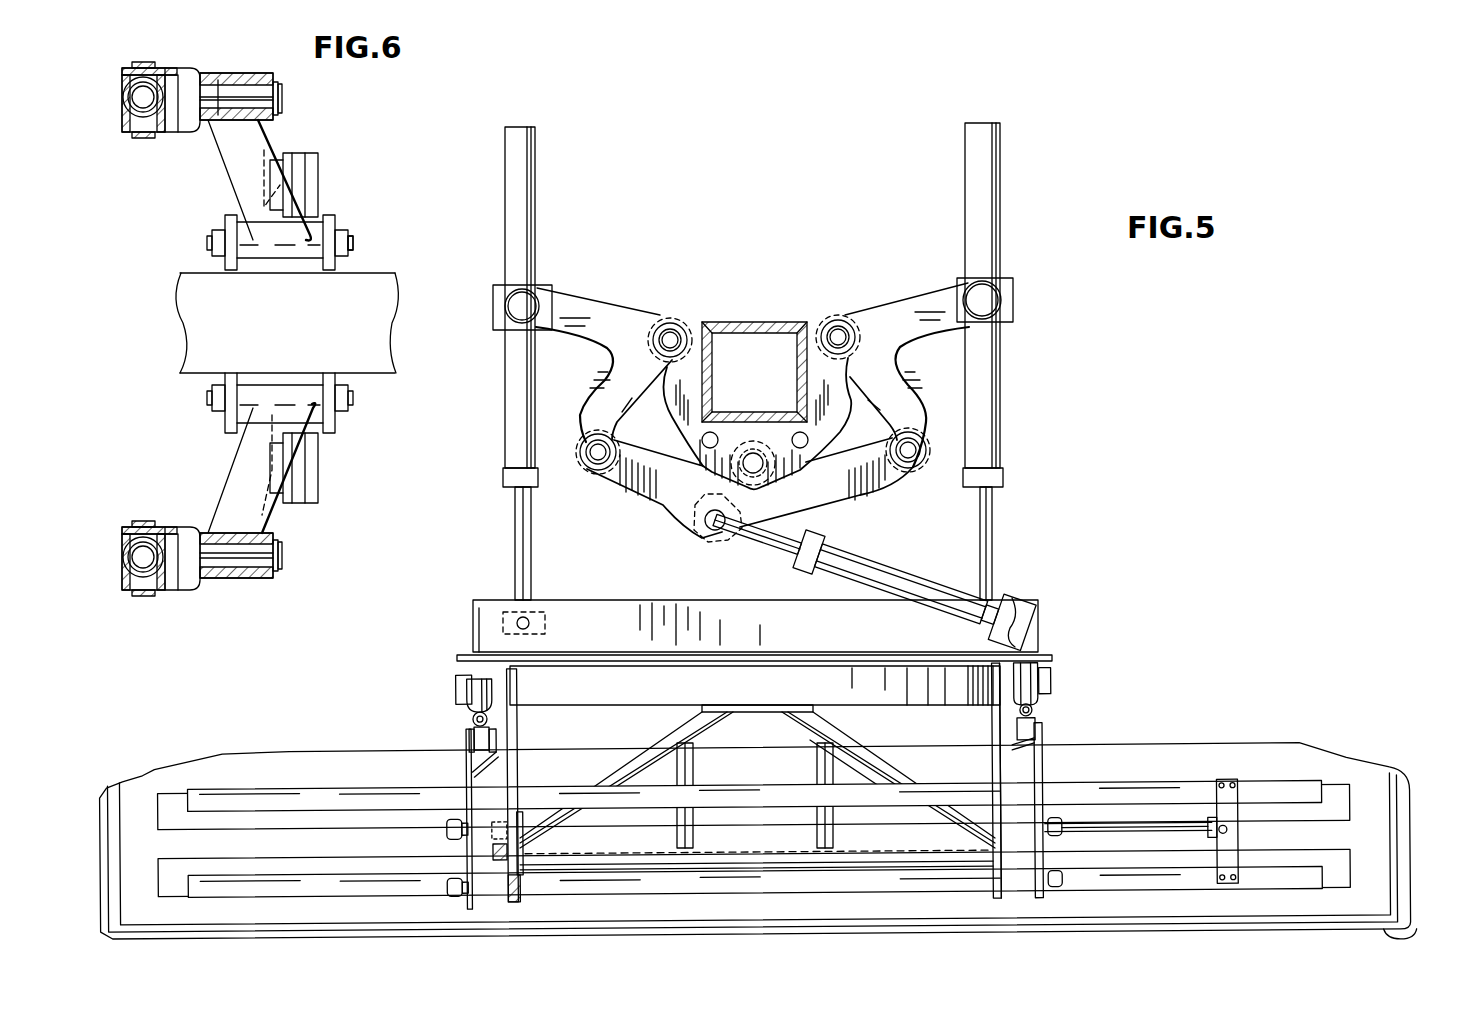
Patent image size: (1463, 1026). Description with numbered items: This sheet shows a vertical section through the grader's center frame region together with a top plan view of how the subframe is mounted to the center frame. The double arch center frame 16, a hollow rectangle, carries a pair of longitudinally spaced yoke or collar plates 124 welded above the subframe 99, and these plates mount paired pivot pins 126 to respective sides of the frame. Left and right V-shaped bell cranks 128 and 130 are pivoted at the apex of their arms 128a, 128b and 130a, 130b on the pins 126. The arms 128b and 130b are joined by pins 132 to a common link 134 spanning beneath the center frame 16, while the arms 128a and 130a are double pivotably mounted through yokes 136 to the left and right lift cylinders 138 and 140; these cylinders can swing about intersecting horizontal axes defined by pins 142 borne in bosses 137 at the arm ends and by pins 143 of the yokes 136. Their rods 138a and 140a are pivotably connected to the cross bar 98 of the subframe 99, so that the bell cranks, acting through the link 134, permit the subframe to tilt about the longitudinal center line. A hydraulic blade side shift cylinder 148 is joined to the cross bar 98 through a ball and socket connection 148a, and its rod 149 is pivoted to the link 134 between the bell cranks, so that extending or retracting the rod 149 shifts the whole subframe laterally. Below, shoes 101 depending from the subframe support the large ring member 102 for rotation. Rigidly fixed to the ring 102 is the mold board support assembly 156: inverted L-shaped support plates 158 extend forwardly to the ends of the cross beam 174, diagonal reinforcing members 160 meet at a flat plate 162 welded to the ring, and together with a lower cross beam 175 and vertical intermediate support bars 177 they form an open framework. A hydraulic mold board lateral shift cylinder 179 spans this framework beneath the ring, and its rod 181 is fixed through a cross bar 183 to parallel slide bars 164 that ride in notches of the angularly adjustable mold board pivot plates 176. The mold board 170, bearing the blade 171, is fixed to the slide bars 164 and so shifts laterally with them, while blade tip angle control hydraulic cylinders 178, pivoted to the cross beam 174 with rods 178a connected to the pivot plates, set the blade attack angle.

In FIG. 6, the double arch center frame 16 is at (370, 354).
In FIG. 5, the double arch center frame 16 is at (776, 320).
In FIG. 5, the cross bar 98 is at (1040, 607).
In FIG. 5, the subframe 99 is at (1045, 630).
In FIG. 5, the shoes 101 is at (930, 653).
In FIG. 5, the ring member 102 is at (972, 665).
In FIG. 6, the yoke or collar plates 124 is at (232, 233).
In FIG. 5, the yoke or collar plates 124 is at (692, 328).
In FIG. 6, the pivot pins 126 is at (352, 239).
In FIG. 5, the pivot pins 126 is at (838, 318).
In FIG. 6, the left bell crank 128 is at (222, 475).
In FIG. 5, the left bell crank 128 is at (618, 306).
In FIG. 6, the bell crank arm 128a is at (282, 430).
In FIG. 5, the bell crank arm 128a is at (578, 297).
In FIG. 6, the bell crank arm 128b is at (300, 478).
In FIG. 5, the bell crank arm 128b is at (630, 404).
In FIG. 6, the right bell crank 130 is at (272, 140).
In FIG. 5, the right bell crank 130 is at (907, 296).
In FIG. 6, the bell crank arm 130a is at (242, 155).
In FIG. 5, the bell crank arm 130a is at (928, 330).
In FIG. 6, the bell crank arm 130b is at (302, 172).
In FIG. 5, the bell crank arm 130b is at (893, 405).
In FIG. 6, the pins 132 is at (233, 77).
In FIG. 5, the pins 132 is at (597, 470).
In FIG. 5, the link 134 is at (680, 520).
In FIG. 6, the yokes 136 is at (176, 69).
In FIG. 5, the yokes 136 is at (505, 292).
In FIG. 6, the bosses 137 is at (250, 583).
In FIG. 5, the left lift cylinder 138 is at (536, 396).
In FIG. 5, the rod 138a is at (528, 549).
In FIG. 5, the right lift cylinder 140 is at (1003, 394).
In FIG. 5, the rod 140a is at (990, 554).
In FIG. 6, the pins 142 is at (283, 97).
In FIG. 6, the pins 143 is at (130, 70).
In FIG. 5, the hydraulic blade side shift cylinder 148 is at (886, 570).
In FIG. 5, the ball and socket connection 148a is at (1015, 595).
In FIG. 5, the rod 149 is at (797, 540).
In FIG. 5, the mold board support assembly 156 is at (1040, 727).
In FIG. 5, the support plates 158 is at (995, 775).
In FIG. 5, the diagonal reinforcing members 160 is at (800, 738).
In FIG. 5, the flat plate 162 is at (752, 705).
In FIG. 5, the slide bars 164 is at (1178, 777).
In FIG. 5, the mold board 170 is at (1342, 752).
In FIG. 5, the blade 171 is at (1412, 933).
In FIG. 5, the cross beam 174 is at (1055, 678).
In FIG. 5, the lower cross beam 175 is at (912, 855).
In FIG. 5, the mold board pivot plates 176 is at (465, 778).
In FIG. 5, the vertical intermediate support bars 177 is at (694, 828).
In FIG. 5, the blade tip angle control hydraulic cylinders 178 is at (468, 690).
In FIG. 5, the cylinder rod 178a is at (474, 714).
In FIG. 5, the hydraulic mold board lateral shift cylinder 179 is at (918, 793).
In FIG. 5, the rod 181 is at (1140, 840).
In FIG. 5, the cross bar 183 is at (1240, 842).